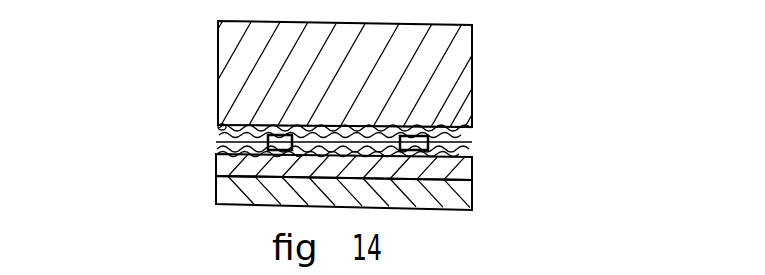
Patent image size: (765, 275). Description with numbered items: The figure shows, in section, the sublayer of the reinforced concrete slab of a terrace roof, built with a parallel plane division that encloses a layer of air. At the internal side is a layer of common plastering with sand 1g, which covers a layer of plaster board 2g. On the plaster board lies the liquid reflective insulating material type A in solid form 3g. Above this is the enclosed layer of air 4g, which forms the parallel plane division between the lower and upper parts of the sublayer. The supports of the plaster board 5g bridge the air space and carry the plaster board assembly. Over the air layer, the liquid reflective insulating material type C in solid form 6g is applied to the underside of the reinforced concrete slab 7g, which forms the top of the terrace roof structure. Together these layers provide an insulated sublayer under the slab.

The layer of common plastering with sand 1g is at (220, 197).
The layer of plaster board 2g is at (220, 170).
The liquid reflective insulating material type A in solid form 3g is at (220, 146).
The enclosed layer of air 4g is at (226, 139).
The supports of the plaster board 5g is at (428, 143).
The liquid reflective insulating material type C in solid form 6g is at (220, 125).
The reinforced concrete slab 7g is at (232, 60).